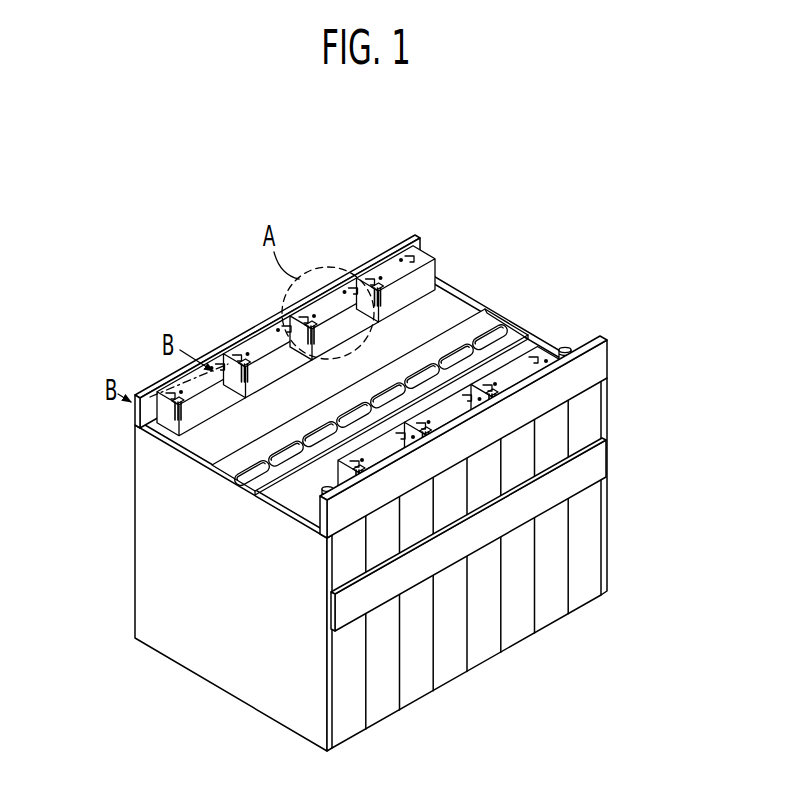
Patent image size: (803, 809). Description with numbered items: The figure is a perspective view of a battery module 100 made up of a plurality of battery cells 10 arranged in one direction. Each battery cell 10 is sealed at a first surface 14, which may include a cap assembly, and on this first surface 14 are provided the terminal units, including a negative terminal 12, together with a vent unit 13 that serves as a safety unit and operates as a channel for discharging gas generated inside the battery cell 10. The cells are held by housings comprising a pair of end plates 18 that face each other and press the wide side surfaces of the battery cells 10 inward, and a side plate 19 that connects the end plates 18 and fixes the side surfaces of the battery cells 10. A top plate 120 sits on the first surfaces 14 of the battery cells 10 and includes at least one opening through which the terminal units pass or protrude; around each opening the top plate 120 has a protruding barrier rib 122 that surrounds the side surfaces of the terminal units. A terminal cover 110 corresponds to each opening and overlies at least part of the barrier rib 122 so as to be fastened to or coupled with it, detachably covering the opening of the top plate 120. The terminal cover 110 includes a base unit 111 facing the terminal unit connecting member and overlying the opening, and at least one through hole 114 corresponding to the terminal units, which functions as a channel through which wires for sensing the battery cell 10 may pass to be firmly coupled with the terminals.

The battery module 100 is at (194, 183).
The battery cell 10 is at (549, 569).
The negative terminal 12 is at (571, 347).
The vent unit 13 is at (490, 336).
The first surface 14 is at (564, 346).
The end plate 18 is at (127, 543).
The side plate 19 is at (589, 463).
The terminal cover 110 is at (444, 245).
The base unit 111 is at (436, 250).
The through hole 114 is at (379, 283).
The top plate 120 is at (232, 329).
The barrier rib 122 is at (432, 300).